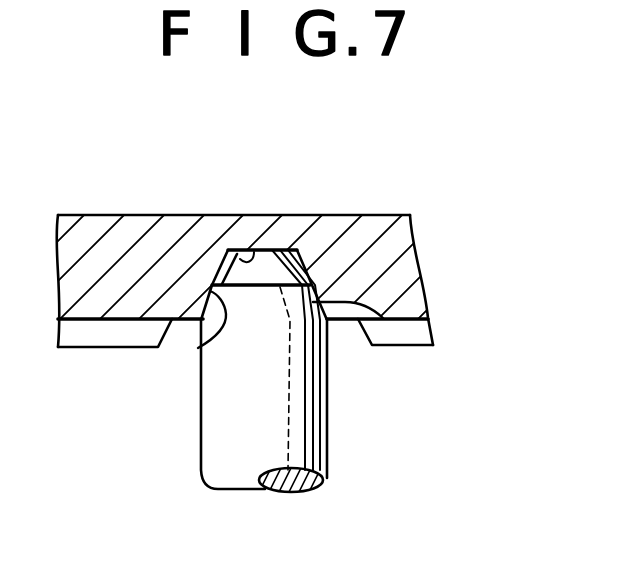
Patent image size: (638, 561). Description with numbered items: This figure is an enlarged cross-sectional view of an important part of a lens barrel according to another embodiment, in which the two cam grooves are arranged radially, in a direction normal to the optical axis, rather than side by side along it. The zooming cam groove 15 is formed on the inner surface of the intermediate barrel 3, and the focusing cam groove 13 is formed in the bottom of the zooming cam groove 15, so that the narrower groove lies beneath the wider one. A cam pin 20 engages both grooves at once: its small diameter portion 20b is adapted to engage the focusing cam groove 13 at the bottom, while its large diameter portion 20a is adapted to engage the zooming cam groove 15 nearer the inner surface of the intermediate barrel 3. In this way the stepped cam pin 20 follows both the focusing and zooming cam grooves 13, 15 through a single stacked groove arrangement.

The intermediate barrel 3 is at (150, 228).
The focusing cam groove 13 is at (254, 252).
The zooming cam groove 15 is at (198, 348).
The cam pin 20 is at (348, 447).
The large diameter portion 20a is at (368, 323).
The small diameter portion 20b is at (300, 265).